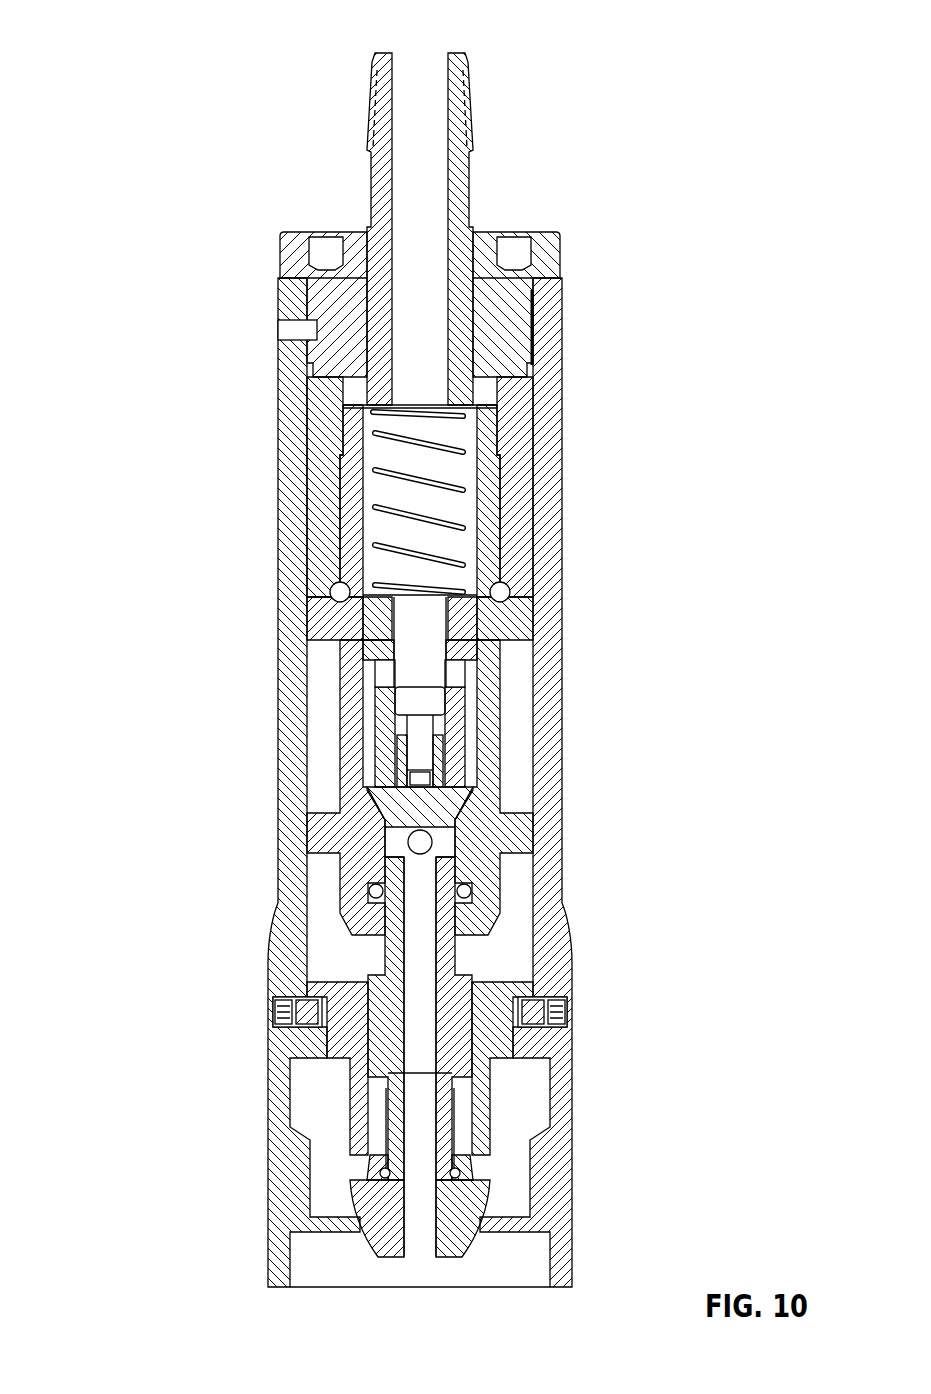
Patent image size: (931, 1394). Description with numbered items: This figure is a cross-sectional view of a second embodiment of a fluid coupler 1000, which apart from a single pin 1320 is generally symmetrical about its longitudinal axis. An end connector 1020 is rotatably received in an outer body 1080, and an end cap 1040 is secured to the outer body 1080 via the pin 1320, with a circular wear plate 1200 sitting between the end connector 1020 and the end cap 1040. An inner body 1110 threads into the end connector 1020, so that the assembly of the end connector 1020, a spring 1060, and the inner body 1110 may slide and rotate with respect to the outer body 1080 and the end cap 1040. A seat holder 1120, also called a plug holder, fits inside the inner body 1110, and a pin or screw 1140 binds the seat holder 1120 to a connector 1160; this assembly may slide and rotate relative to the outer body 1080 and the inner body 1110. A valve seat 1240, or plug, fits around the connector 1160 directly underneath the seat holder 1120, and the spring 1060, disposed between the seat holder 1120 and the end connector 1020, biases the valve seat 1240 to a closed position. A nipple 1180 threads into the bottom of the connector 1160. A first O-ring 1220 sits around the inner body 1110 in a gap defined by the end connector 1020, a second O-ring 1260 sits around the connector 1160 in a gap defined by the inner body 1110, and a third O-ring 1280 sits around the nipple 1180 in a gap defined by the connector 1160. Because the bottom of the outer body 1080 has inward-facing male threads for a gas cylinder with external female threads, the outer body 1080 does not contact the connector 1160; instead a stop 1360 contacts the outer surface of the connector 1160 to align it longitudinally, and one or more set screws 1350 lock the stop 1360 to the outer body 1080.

The fluid coupler 1000 is at (359, 648).
The end connector 1020 is at (463, 93).
The end cap 1040 is at (547, 253).
The spring 1060 is at (465, 490).
The outer body 1080 is at (548, 700).
The inner body 1110 is at (460, 630).
The seat holder 1120 is at (503, 592).
The pin or screw 1140 is at (415, 700).
The connector 1160 is at (457, 1002).
The nipple 1180 is at (443, 1140).
The circular wear plate 1200 is at (527, 367).
The first O-ring 1220 is at (335, 592).
The valve seat 1240 is at (467, 793).
The second O-ring 1260 is at (470, 888).
The third O-ring 1280 is at (378, 1175).
The pin 1320 is at (290, 335).
The set screw 1350 is at (565, 1027).
The stop 1360 is at (330, 1033).